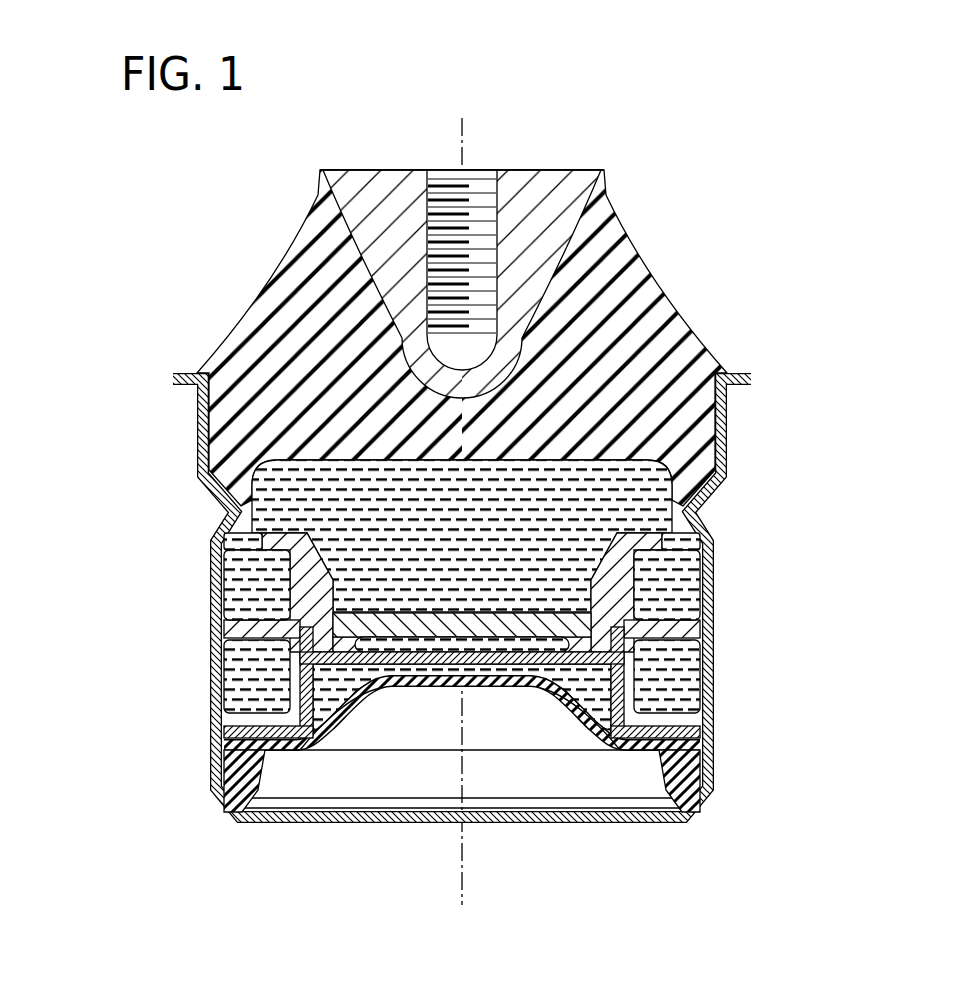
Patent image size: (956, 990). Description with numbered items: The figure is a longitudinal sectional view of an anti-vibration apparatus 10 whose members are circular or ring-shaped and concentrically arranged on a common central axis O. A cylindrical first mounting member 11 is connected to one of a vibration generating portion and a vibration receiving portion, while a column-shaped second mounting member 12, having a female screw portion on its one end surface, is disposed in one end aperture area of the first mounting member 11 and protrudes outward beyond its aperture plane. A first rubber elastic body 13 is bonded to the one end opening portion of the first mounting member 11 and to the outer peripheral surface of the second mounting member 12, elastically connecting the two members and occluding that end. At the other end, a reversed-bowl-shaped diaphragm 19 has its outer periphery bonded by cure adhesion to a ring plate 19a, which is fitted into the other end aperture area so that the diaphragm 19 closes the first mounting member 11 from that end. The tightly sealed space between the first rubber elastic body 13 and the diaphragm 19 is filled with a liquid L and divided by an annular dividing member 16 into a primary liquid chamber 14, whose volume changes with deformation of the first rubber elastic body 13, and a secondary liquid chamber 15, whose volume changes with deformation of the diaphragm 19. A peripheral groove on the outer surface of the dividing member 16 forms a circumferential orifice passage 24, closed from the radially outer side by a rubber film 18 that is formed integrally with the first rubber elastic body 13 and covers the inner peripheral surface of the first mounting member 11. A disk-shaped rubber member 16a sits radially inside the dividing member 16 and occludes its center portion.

The anti-vibration apparatus 10 is at (690, 177).
The first mounting member 11 is at (712, 633).
The second mounting member 12 is at (546, 178).
The first rubber elastic body 13 is at (650, 297).
The primary liquid chamber 14 is at (428, 547).
The secondary liquid chamber 15 is at (335, 685).
The dividing member 16 is at (682, 540).
The disk-shaped rubber member 16a is at (403, 607).
The rubber film 18 is at (243, 680).
The diaphragm 19 is at (400, 687).
The ring plate 19a is at (237, 762).
The orifice passage 24 is at (677, 678).
The central axis O is at (460, 137).
The liquid L is at (652, 515).